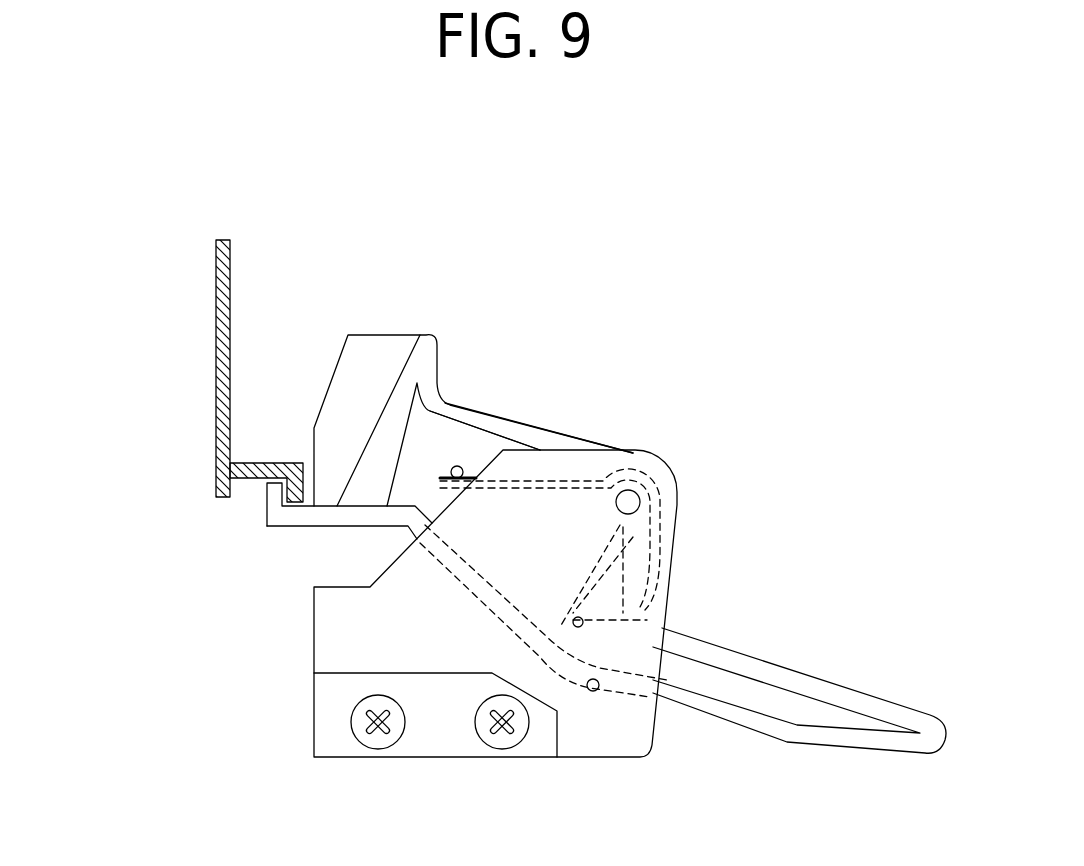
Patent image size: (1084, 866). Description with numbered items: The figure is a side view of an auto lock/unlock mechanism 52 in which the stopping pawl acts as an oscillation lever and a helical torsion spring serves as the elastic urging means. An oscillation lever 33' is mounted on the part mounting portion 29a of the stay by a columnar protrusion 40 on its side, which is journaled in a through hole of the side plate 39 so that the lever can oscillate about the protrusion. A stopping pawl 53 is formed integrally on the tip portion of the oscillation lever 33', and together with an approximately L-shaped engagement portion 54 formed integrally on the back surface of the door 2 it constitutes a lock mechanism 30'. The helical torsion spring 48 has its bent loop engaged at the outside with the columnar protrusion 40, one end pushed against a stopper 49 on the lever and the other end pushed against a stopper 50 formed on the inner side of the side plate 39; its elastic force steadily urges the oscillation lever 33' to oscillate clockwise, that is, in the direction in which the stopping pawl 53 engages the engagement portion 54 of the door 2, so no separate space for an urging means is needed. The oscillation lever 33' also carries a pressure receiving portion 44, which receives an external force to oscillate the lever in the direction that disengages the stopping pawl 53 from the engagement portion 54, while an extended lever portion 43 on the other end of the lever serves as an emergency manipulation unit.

The door 2 is at (216, 317).
The engagement portion 54 is at (261, 462).
The stopping pawl 53 is at (267, 506).
The oscillation lever 33' is at (219, 596).
The lock mechanism 30' is at (115, 628).
The stopper 49 is at (457, 466).
The pressure receiving portion 44 is at (507, 419).
The helical torsion spring 48 is at (572, 480).
The auto lock/unlock mechanism 52 is at (687, 413).
The columnar protrusion 40 is at (641, 502).
The stopper 50 is at (647, 614).
The extended lever portion 43 is at (870, 705).
The side plate 39 is at (467, 642).
The part mounting portion 29a is at (583, 758).